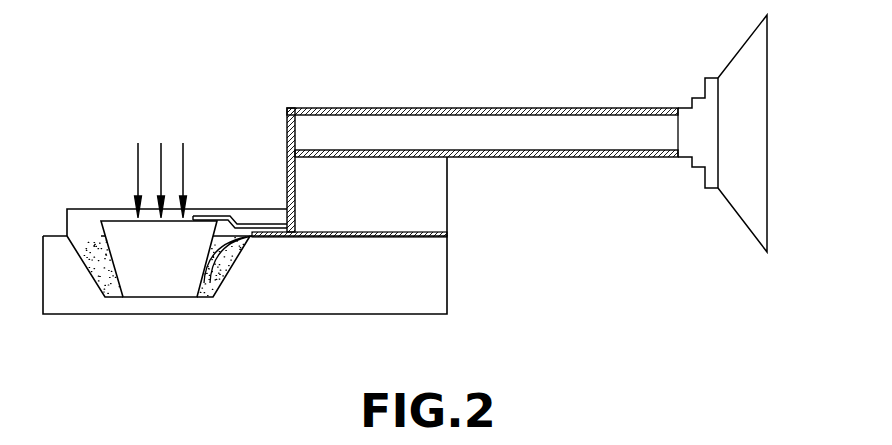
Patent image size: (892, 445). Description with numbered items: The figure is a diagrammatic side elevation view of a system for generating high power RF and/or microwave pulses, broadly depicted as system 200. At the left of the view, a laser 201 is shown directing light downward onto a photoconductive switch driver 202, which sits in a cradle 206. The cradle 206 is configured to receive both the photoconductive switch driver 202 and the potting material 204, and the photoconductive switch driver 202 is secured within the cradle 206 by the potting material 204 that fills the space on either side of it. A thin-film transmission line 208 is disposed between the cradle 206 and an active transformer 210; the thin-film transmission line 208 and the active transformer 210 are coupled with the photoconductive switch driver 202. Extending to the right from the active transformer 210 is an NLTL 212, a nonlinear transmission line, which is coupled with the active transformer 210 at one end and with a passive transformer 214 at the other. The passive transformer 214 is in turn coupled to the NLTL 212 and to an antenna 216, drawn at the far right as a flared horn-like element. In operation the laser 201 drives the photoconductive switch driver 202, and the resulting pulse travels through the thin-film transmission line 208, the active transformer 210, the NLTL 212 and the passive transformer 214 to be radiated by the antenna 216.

The system for generating high power pulses 200 is at (268, 88).
The laser 201 is at (138, 171).
The photoconductive switch driver 202 is at (162, 272).
The potting material 204 is at (90, 273).
The cradle 206 is at (437, 273).
The thin-film transmission line 208 is at (350, 237).
The active transformer 210 is at (433, 199).
The NLTL 212 is at (560, 108).
The passive transformer 214 is at (689, 103).
The antenna 216 is at (755, 128).